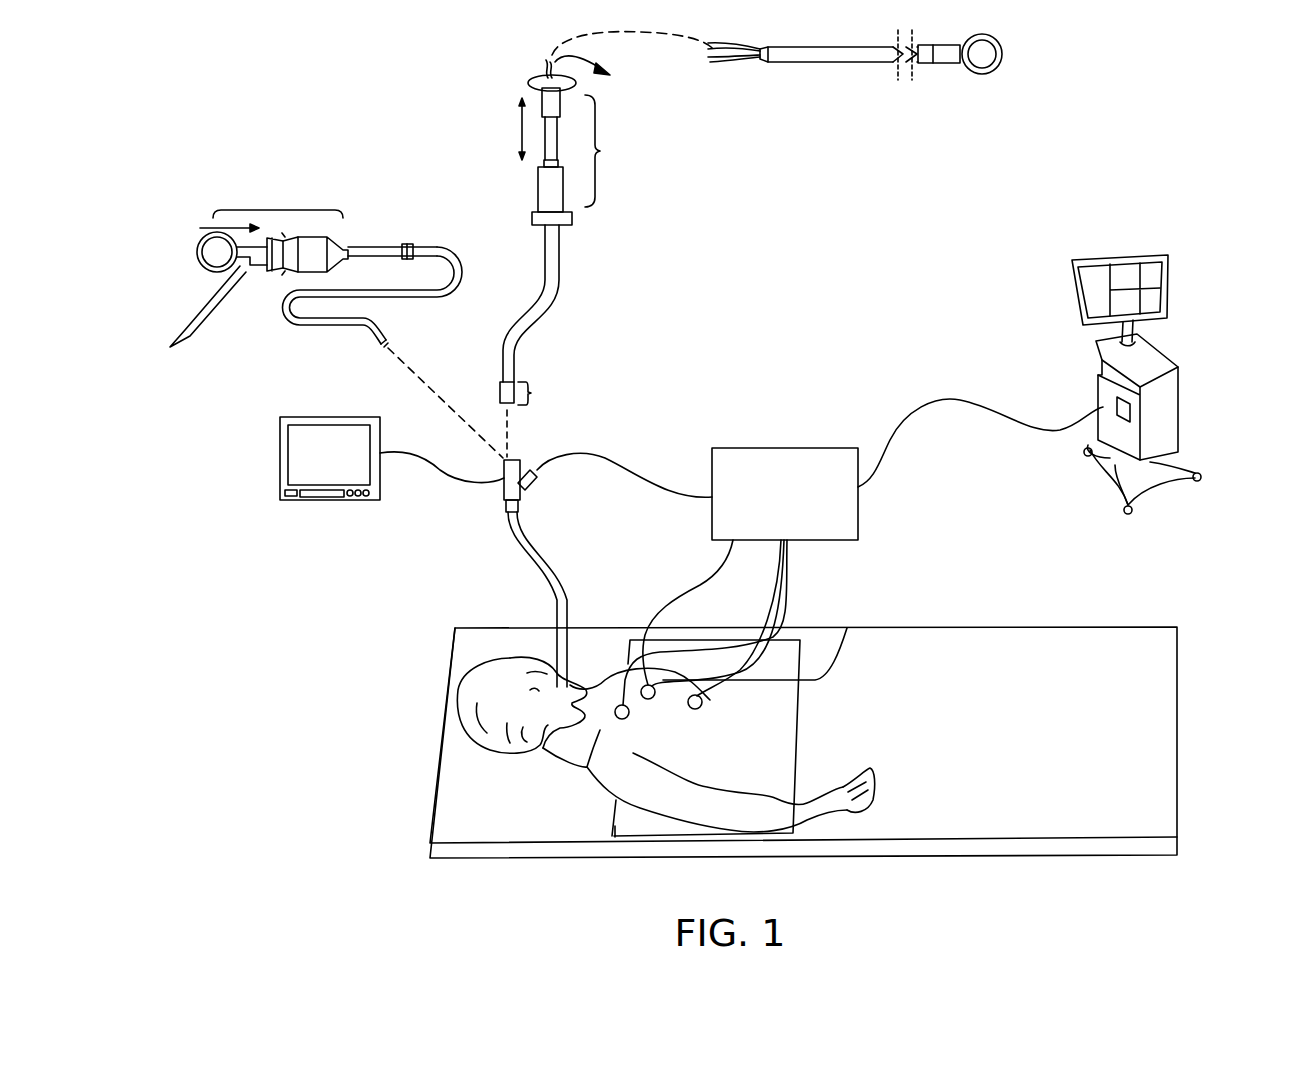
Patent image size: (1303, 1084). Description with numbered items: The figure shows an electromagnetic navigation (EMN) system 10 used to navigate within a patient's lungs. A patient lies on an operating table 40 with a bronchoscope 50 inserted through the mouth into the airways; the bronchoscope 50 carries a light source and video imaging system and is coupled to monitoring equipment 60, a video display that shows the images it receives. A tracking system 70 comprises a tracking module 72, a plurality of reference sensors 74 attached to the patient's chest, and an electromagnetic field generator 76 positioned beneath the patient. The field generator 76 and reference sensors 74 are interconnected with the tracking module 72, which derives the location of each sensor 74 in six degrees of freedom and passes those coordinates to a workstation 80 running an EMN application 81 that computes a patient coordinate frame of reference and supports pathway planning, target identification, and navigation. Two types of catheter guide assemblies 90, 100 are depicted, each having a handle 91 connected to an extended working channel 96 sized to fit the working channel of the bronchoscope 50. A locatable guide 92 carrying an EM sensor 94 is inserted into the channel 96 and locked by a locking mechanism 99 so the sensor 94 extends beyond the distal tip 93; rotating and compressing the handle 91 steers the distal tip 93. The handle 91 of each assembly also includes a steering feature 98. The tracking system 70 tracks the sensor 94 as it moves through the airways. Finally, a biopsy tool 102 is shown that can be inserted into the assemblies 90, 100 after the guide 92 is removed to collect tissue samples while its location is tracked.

The EMN system 10 is at (1207, 128).
The operating table 40 is at (455, 790).
The bronchoscope 50 is at (518, 552).
The monitoring equipment 60 is at (289, 502).
The tracking system 70 is at (850, 351).
The tracking module 72 is at (771, 507).
The reference sensors 74 is at (655, 700).
The electromagnetic field generator 76 is at (617, 830).
The workstation 80 is at (1170, 382).
The EMN application 81 is at (1168, 300).
The catheter guide assembly 90 is at (197, 184).
The handle 91 is at (421, 181).
The locatable guide 92 is at (373, 245).
The distal tip 93 is at (383, 348).
The EM sensor 94 is at (388, 342).
The extended working channel 96 is at (462, 275).
The irrigation tool 98 is at (182, 338).
The locking mechanism 99 is at (411, 243).
The catheter guide assembly 100 is at (586, 264).
The biopsy tool 102 is at (1010, 55).